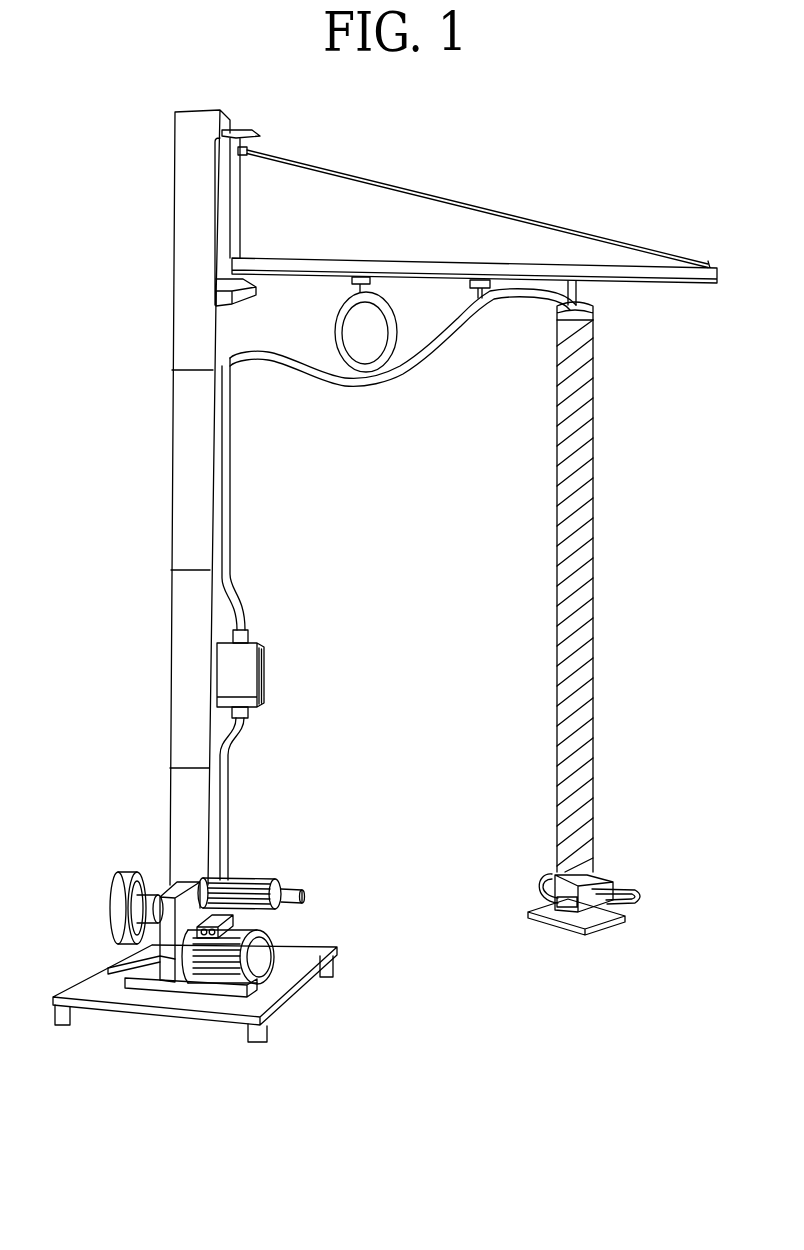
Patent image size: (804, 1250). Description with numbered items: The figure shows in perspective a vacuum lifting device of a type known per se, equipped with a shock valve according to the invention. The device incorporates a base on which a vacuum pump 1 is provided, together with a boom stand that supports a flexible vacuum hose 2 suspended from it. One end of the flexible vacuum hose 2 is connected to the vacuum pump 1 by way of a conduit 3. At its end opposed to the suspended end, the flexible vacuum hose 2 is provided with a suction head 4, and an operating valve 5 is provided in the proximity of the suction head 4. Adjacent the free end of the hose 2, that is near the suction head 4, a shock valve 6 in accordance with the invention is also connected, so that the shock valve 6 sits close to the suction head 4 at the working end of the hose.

The vacuum pump 1 is at (267, 933).
The flexible vacuum hose 2 is at (575, 573).
The conduit 3 is at (318, 380).
The suction head 4 is at (543, 927).
The operating valve 5 is at (627, 922).
The shock valve 6 is at (603, 875).